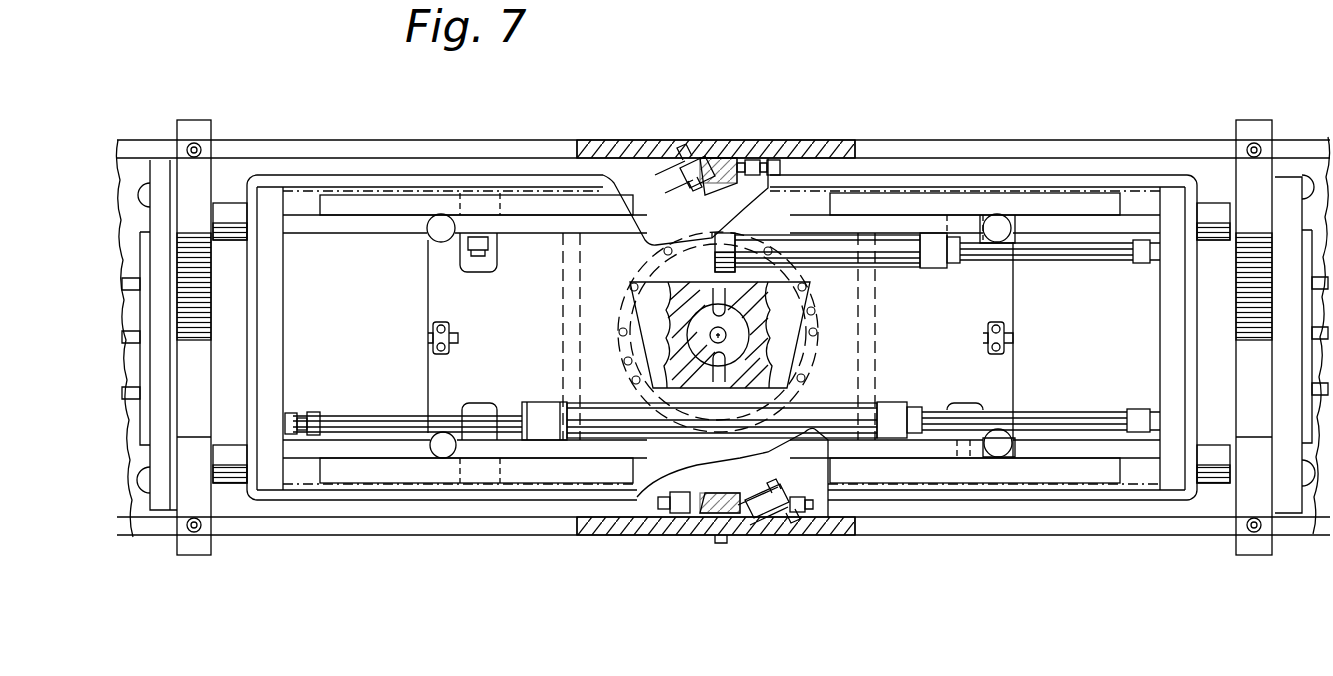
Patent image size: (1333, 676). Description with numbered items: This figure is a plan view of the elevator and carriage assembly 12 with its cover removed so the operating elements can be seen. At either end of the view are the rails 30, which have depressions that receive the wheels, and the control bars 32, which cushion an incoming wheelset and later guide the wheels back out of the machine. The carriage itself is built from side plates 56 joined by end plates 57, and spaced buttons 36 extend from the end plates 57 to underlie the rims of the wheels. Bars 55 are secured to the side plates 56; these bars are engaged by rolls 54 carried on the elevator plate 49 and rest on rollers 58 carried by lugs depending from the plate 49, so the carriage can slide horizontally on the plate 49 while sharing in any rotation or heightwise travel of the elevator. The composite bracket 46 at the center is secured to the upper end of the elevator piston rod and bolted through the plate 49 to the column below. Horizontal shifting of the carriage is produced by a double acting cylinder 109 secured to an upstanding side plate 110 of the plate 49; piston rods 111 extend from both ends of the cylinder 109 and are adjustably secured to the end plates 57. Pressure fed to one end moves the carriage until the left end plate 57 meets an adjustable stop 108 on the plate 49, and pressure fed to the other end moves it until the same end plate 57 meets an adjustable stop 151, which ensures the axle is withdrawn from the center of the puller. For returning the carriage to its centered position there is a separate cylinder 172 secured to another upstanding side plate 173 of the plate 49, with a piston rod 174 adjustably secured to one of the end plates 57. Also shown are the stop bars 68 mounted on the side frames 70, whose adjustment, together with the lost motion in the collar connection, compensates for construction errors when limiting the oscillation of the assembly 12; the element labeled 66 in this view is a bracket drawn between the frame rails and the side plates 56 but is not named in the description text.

The elevator and carriage assembly 12 is at (1000, 170).
The rails 30 is at (200, 123).
The control bars 32 is at (163, 168).
The buttons 36 is at (228, 443).
The composite bracket 46 is at (813, 290).
The plate 49 is at (432, 370).
The rolls 54 is at (432, 233).
The bars 55 is at (367, 212).
The side plates 56 is at (305, 178).
The end plates 57 is at (275, 272).
The rollers 58 is at (500, 205).
The mounting bracket 66 is at (680, 160).
The stop bars 68 is at (722, 162).
The side frames 70 is at (767, 153).
The adjustable stop 108 is at (428, 333).
The double acting cylinder 109 is at (620, 413).
The upstanding side plate 110 is at (870, 450).
The piston rods 111 is at (358, 418).
The adjustable stop 151 is at (1013, 337).
The cylinder 172 is at (850, 277).
The upstanding side plate 173 is at (895, 225).
The piston rod 174 is at (1083, 258).